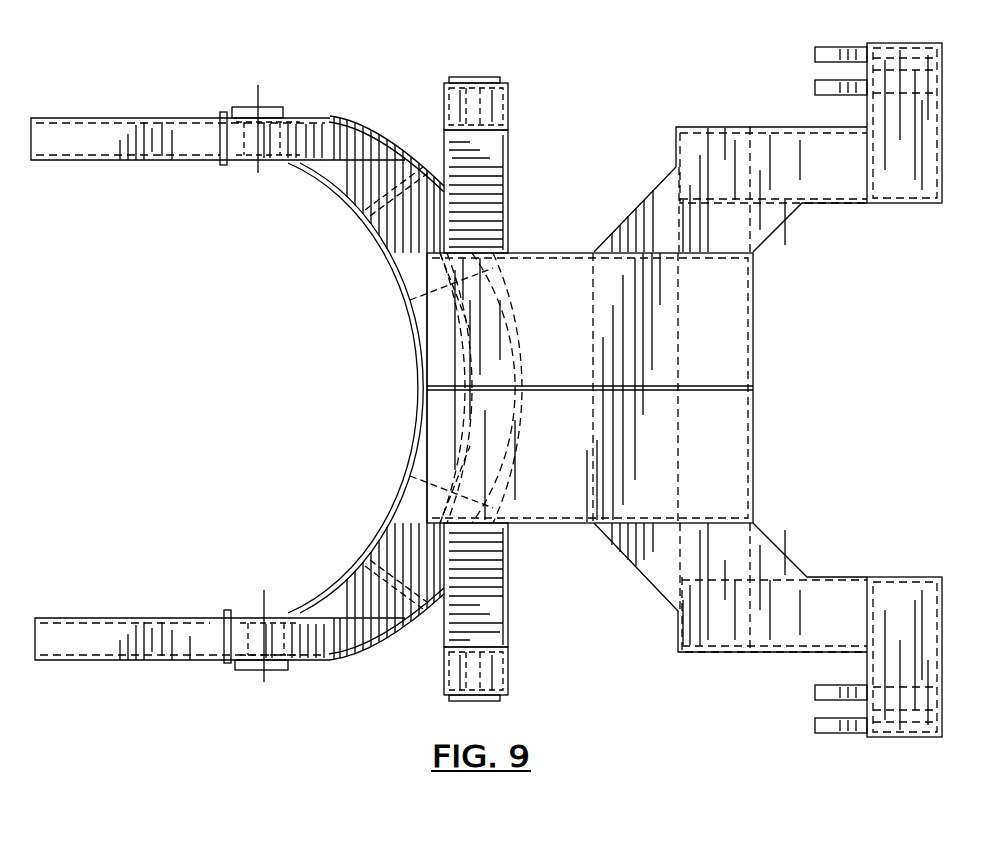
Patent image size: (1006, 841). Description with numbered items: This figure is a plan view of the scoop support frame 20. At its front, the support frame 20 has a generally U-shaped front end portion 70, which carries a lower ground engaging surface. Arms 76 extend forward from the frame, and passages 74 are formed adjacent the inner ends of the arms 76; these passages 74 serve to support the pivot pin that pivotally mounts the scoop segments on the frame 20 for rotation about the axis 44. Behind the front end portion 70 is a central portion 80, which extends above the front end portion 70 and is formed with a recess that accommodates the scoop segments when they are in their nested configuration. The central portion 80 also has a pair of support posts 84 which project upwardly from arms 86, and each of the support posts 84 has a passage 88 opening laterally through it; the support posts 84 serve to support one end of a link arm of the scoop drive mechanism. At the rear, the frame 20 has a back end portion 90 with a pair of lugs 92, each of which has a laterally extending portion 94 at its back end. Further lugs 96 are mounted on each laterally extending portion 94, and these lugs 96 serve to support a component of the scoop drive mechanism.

The support frame 20 is at (381, 106).
The axis 44 is at (266, 606).
The front end portion 70 is at (354, 652).
The passages 74 is at (248, 113).
The arms 76 is at (138, 150).
The central portion 80 is at (547, 252).
The support posts 84 is at (508, 107).
The arms 86 is at (500, 170).
The passage 88 is at (482, 96).
The back end portion 90 is at (912, 286).
The lugs 92 is at (843, 205).
The laterally extending portion 94 is at (930, 110).
The lugs 96 is at (815, 55).